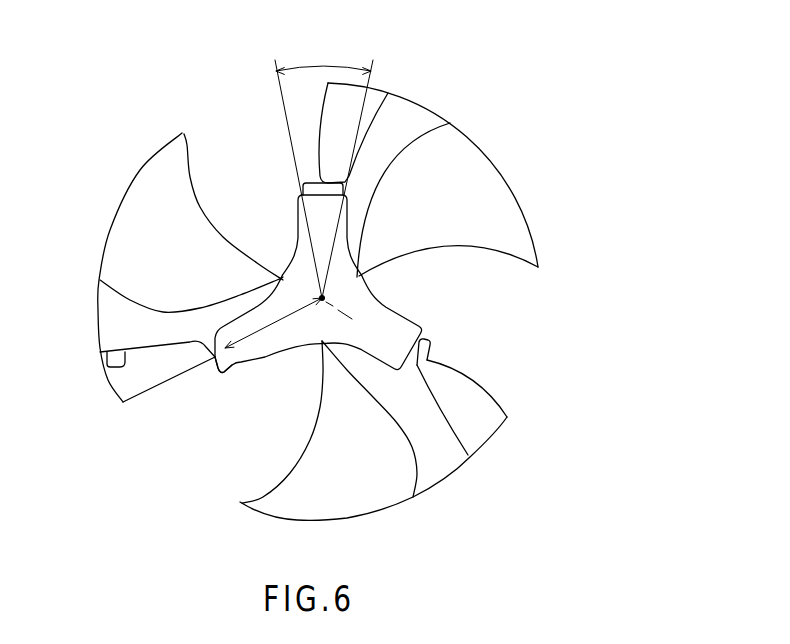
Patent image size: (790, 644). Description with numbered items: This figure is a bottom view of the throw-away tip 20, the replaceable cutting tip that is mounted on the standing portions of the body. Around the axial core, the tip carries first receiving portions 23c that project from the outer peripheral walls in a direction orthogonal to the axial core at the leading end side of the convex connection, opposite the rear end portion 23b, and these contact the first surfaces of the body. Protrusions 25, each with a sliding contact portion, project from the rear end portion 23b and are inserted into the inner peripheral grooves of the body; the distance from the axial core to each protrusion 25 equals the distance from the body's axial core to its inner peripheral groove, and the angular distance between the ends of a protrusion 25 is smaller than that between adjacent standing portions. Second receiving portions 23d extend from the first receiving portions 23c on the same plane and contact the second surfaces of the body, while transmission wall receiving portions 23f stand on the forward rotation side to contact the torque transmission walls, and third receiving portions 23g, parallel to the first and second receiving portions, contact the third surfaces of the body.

The throw-away tip 20 is at (613, 104).
The rear end portion 23b is at (393, 327).
The first receiving portion 23c is at (420, 122).
The second receiving portion 23d is at (429, 344).
The transmission wall receiving portion 23f is at (104, 356).
The third receiving portion 23g is at (465, 387).
The protrusion 25 is at (222, 375).